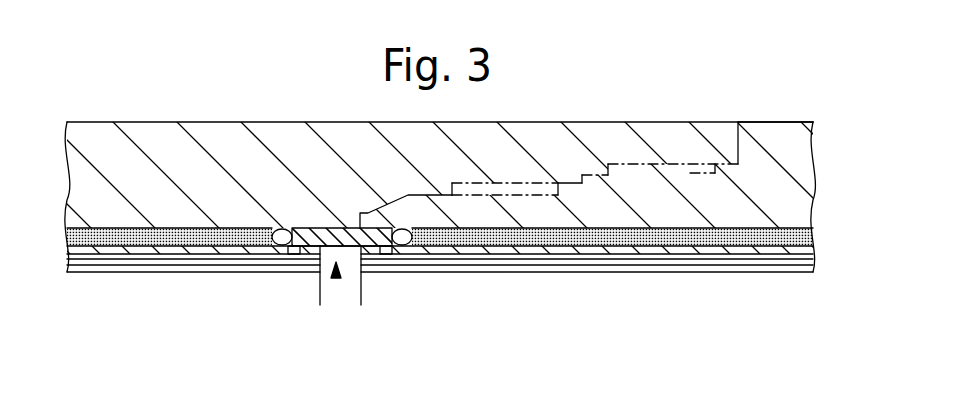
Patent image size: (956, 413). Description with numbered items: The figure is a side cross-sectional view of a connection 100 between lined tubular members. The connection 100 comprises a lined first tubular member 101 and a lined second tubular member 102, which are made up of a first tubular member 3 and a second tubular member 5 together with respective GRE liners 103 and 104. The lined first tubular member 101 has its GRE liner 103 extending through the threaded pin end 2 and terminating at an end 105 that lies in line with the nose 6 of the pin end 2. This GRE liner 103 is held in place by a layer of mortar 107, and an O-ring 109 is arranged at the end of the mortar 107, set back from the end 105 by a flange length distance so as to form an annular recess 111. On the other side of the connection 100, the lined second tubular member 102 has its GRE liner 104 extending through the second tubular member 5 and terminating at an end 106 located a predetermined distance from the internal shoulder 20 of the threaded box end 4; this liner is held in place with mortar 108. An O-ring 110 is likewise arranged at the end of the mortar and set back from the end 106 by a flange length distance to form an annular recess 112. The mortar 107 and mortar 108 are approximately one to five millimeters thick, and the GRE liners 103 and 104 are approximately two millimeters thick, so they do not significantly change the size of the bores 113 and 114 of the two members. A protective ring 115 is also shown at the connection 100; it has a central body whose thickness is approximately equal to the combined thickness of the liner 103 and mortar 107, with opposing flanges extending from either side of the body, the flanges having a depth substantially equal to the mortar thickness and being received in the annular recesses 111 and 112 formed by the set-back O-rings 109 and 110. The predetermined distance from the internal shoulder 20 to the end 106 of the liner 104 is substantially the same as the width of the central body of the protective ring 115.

The connection 100 is at (547, 110).
The lined first tubular member 101 is at (773, 110).
The lined second tubular member 102 is at (218, 110).
The pin end 2 is at (515, 212).
The first tubular member 3 is at (752, 121).
The box end 4 is at (648, 121).
The second tubular member 5 is at (130, 121).
The nose 6 is at (372, 213).
The internal shoulder 20 is at (344, 225).
The GRE liner 103 is at (660, 259).
The GRE liner 104 is at (185, 255).
The end 105 is at (361, 305).
The end 106 is at (320, 305).
The mortar 107 is at (733, 246).
The mortar 108 is at (103, 243).
The O-ring 109 is at (400, 244).
The O-ring 110 is at (268, 242).
The annular recess 111 is at (390, 252).
The annular recess 112 is at (296, 250).
The bore 113 is at (587, 387).
The bore 114 is at (213, 387).
The protective ring 115 is at (336, 278).